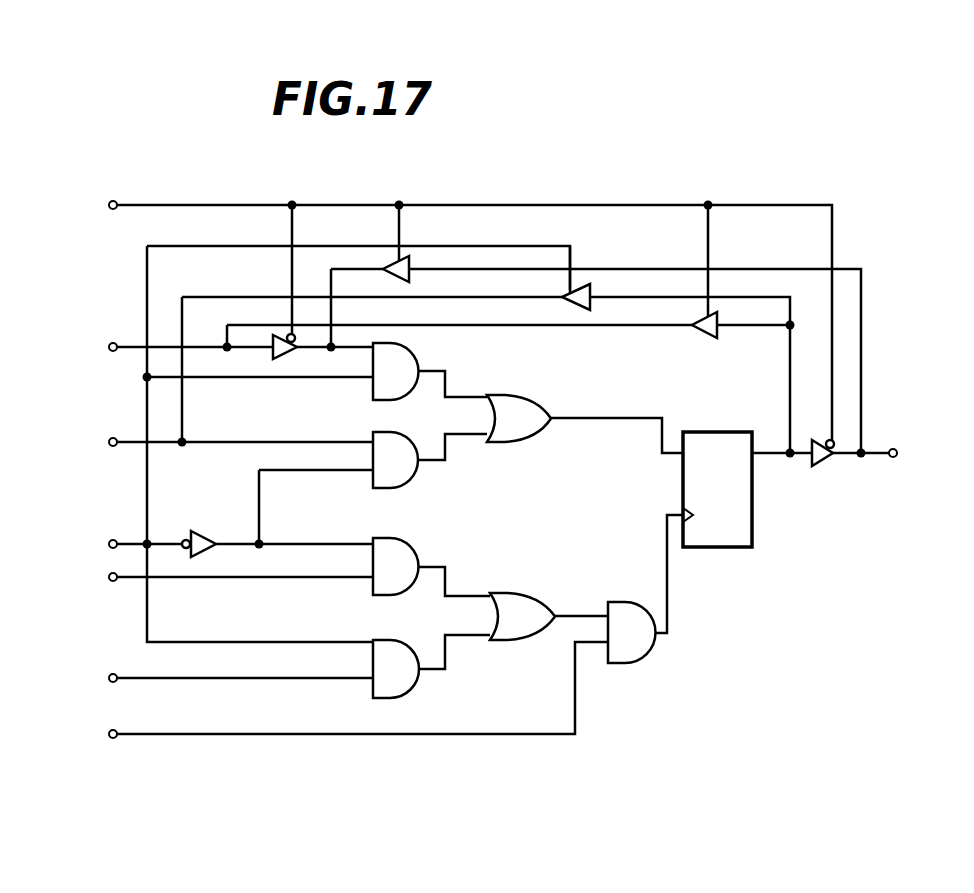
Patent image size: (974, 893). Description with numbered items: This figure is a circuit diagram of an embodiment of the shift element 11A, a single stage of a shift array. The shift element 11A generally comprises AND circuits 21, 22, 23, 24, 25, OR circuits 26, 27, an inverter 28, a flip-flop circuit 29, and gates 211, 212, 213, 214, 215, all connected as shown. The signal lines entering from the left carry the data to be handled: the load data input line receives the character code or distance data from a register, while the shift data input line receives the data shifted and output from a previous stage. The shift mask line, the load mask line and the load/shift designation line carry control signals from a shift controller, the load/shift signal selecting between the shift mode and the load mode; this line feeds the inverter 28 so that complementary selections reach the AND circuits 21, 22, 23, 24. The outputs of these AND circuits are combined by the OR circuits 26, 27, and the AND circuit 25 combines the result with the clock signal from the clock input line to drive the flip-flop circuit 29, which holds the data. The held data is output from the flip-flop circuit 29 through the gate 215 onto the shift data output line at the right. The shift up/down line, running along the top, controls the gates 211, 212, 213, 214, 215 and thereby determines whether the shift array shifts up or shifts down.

The shift element 11A is at (775, 129).
The AND circuit 21 is at (408, 361).
The AND circuit 22 is at (393, 442).
The AND circuit 23 is at (405, 546).
The AND circuit 24 is at (395, 650).
The AND circuit 25 is at (622, 608).
The OR circuit 26 is at (540, 405).
The OR circuit 27 is at (520, 602).
The inverter 28 is at (205, 537).
The flip-flop circuit 29 is at (716, 438).
The gate 211 is at (274, 354).
The gate 212 is at (409, 262).
The gate 213 is at (587, 290).
The gate 214 is at (717, 318).
The gate 215 is at (828, 462).